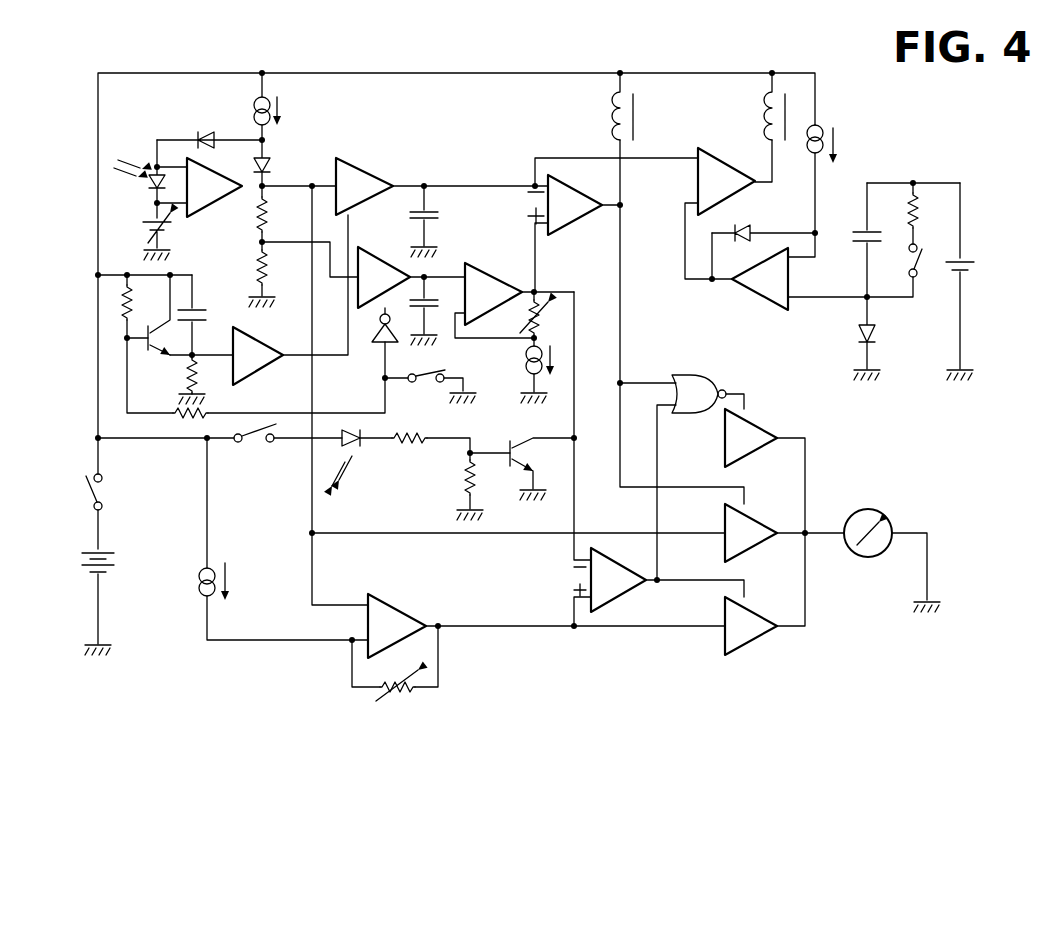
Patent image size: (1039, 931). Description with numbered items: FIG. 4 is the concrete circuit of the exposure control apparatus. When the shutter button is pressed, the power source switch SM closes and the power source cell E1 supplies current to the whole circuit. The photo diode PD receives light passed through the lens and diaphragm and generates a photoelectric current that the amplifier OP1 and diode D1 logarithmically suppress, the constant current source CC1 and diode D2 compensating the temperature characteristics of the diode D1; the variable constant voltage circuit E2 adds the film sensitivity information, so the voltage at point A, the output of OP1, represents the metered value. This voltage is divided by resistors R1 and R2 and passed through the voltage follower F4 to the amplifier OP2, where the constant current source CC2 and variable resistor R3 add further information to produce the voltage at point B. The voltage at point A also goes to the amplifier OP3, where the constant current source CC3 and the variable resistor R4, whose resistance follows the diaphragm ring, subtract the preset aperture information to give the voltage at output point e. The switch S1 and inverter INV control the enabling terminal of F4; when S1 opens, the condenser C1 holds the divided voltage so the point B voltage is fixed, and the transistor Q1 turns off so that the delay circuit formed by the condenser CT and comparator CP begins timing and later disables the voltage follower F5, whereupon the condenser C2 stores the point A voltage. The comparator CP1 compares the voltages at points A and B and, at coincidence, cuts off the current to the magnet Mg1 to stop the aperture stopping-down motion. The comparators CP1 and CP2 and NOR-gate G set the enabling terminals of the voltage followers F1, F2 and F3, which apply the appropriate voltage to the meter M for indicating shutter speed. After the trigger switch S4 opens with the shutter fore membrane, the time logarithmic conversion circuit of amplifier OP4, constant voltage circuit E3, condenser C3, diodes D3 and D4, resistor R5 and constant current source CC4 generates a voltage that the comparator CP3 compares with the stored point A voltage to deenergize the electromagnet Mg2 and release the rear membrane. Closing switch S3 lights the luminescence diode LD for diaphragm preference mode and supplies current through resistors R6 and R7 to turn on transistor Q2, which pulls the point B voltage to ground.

The constant current source CC1 is at (256, 109).
The diode D1 is at (201, 135).
The diode D2 is at (270, 160).
The point A is at (271, 186).
The photo diode PD is at (131, 174).
The variable constant voltage circuit E2 is at (170, 228).
The amplifier OP1 is at (214, 187).
The resistor R1 is at (254, 214).
The resistor R2 is at (252, 263).
The condenser CT is at (204, 318).
The transistor Q1 is at (152, 351).
The comparator CP is at (258, 356).
The voltage follower F5 is at (364, 186).
The voltage follower F4 is at (384, 277).
The condenser C2 is at (436, 213).
The condenser C1 is at (432, 296).
The comparator CP1 is at (565, 205).
The amplifier OP2 is at (493, 294).
The point B is at (536, 291).
The variable resistor R3 is at (524, 321).
The constant current source CC2 is at (526, 360).
The inverter INV is at (370, 346).
The switch S1 is at (425, 385).
The resistor R6 is at (398, 431).
The luminescence diode LD is at (360, 448).
The resistor R7 is at (463, 482).
The transistor Q2 is at (512, 468).
The switch S3 is at (244, 445).
The power source switch SM is at (86, 485).
The power source cell E1 is at (80, 563).
The constant current source CC3 is at (202, 568).
The amplifier OP3 is at (397, 626).
The output point e is at (438, 620).
The variable resistor R4 is at (394, 701).
The comparator CP2 is at (610, 580).
The NOR-gate G is at (699, 394).
The voltage follower F1 is at (751, 438).
The voltage follower F2 is at (751, 533).
The voltage follower F3 is at (751, 626).
The meter M is at (868, 509).
The magnet Mg1 is at (614, 126).
The electromagnet Mg2 is at (766, 126).
The comparator CP3 is at (726, 181).
The diode D4 is at (754, 232).
The amplifier OP4 is at (760, 279).
The constant current source CC4 is at (824, 132).
The condenser C3 is at (855, 234).
The resistor R5 is at (916, 214).
The trigger switch S4 is at (906, 258).
The constant voltage circuit E3 is at (969, 264).
The diode D3 is at (875, 339).